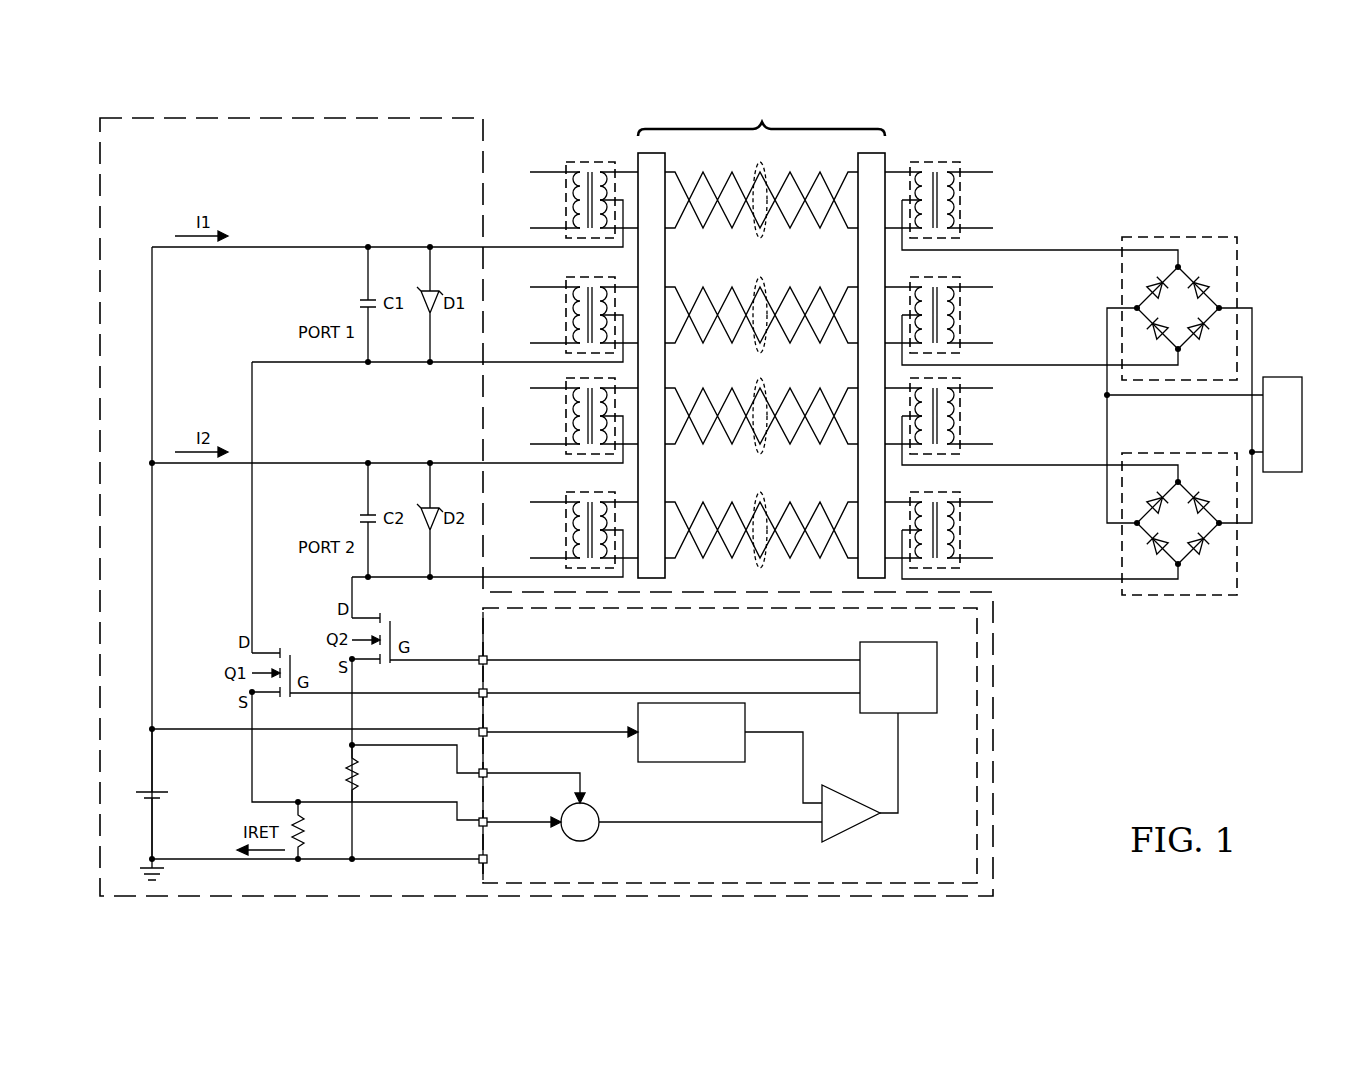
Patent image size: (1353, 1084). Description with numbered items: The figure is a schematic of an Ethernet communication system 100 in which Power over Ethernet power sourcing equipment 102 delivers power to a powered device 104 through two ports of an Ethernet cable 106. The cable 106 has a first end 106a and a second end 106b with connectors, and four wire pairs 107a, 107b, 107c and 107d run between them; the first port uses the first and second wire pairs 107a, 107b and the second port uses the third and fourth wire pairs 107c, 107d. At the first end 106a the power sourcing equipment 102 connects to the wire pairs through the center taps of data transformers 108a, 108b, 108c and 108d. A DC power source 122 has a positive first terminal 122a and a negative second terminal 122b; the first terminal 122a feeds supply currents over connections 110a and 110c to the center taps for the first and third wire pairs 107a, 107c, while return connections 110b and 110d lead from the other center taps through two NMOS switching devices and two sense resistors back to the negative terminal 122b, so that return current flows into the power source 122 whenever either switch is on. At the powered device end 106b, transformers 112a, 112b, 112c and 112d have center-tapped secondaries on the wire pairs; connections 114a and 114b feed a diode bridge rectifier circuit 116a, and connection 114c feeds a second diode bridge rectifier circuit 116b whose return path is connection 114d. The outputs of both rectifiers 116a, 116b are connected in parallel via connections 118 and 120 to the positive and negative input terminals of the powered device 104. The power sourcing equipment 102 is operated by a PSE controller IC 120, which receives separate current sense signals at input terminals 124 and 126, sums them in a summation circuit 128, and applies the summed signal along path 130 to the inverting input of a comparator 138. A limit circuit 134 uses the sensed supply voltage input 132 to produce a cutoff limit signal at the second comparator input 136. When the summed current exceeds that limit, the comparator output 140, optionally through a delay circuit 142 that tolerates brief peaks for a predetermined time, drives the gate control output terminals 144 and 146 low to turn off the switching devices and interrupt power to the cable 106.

The Ethernet communication system 100 is at (1272, 163).
The power sourcing equipment 102 is at (313, 188).
The powered device 104 is at (1287, 377).
The Ethernet cable 106 is at (761, 329).
The first end 106a is at (666, 262).
The second end 106b is at (858, 375).
The first wire pair 107a is at (760, 164).
The second wire pair 107b is at (762, 278).
The third wire pair 107c is at (760, 380).
The fourth wire pair 107d is at (760, 494).
The data transformer 108a is at (566, 212).
The data transformer 108b is at (566, 327).
The data transformer 108c is at (566, 429).
The data transformer 108d is at (566, 542).
The connection 110a is at (441, 246).
The return connection 110b is at (400, 364).
The connection 110c is at (442, 462).
The return connection 110d is at (446, 579).
The transformer 112a is at (962, 215).
The transformer 112b is at (962, 330).
The transformer 112c is at (962, 431).
The transformer 112d is at (962, 545).
The connection 114a is at (1062, 250).
The connection 114b is at (1062, 365).
The connection 114c is at (1062, 466).
The connection 114d is at (1060, 580).
The diode bridge rectifier circuit 116a is at (1188, 237).
The second diode bridge rectifier circuit 116b is at (1188, 596).
The connection 118 is at (1145, 397).
The PSE controller IC 120 is at (725, 863).
The power source 122 is at (170, 795).
The first terminal 122a is at (152, 766).
The second terminal 122b is at (152, 824).
The input terminal 124 is at (400, 802).
The input terminal 126 is at (442, 744).
The summation circuit 128 is at (594, 836).
The summed current sense signal ISEN 130 is at (790, 823).
The voltage sense signal VSEN 132 is at (605, 733).
The limit circuit 134 is at (696, 763).
The second comparator input 136 is at (803, 778).
The comparator 138 is at (866, 832).
The comparator output 140 is at (900, 783).
The delay circuit 142 is at (920, 714).
The switch control output terminal 144 is at (830, 694).
The switch control output terminal 146 is at (592, 660).